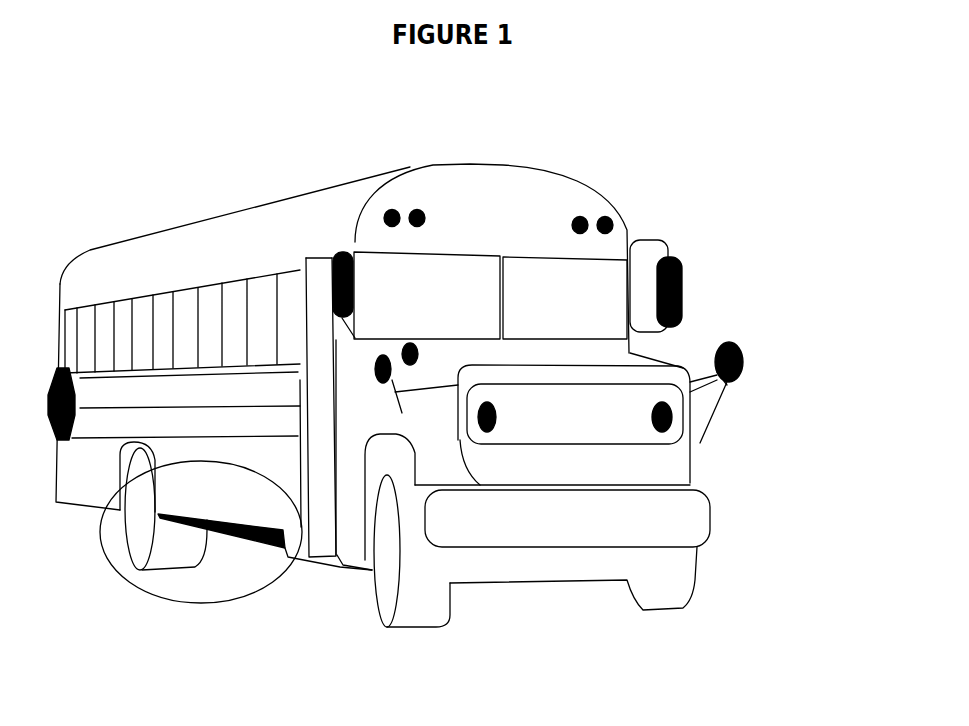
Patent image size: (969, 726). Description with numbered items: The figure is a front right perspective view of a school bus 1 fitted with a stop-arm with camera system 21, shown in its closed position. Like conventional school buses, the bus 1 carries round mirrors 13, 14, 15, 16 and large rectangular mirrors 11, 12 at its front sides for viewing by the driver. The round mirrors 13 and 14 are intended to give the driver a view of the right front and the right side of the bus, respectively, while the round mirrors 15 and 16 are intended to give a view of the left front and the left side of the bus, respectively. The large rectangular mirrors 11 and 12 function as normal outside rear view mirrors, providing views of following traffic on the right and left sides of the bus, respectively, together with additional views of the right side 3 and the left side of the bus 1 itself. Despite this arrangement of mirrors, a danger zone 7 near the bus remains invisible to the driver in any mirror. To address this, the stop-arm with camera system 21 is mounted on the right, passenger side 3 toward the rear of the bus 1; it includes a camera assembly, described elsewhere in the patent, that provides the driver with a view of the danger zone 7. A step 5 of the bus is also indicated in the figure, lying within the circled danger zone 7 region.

The bus 1 is at (573, 183).
The right side of the bus 3 is at (237, 358).
The entry step 5 is at (161, 512).
The danger zone 7 is at (242, 595).
The large rectangular mirror 11 is at (357, 278).
The large rectangular mirror 12 is at (682, 283).
The round mirror 13 is at (418, 350).
The round mirror 14 is at (393, 377).
The round mirror 15 is at (743, 365).
The round mirror 16 is at (745, 380).
The stop-arm with camera system 21 is at (63, 363).